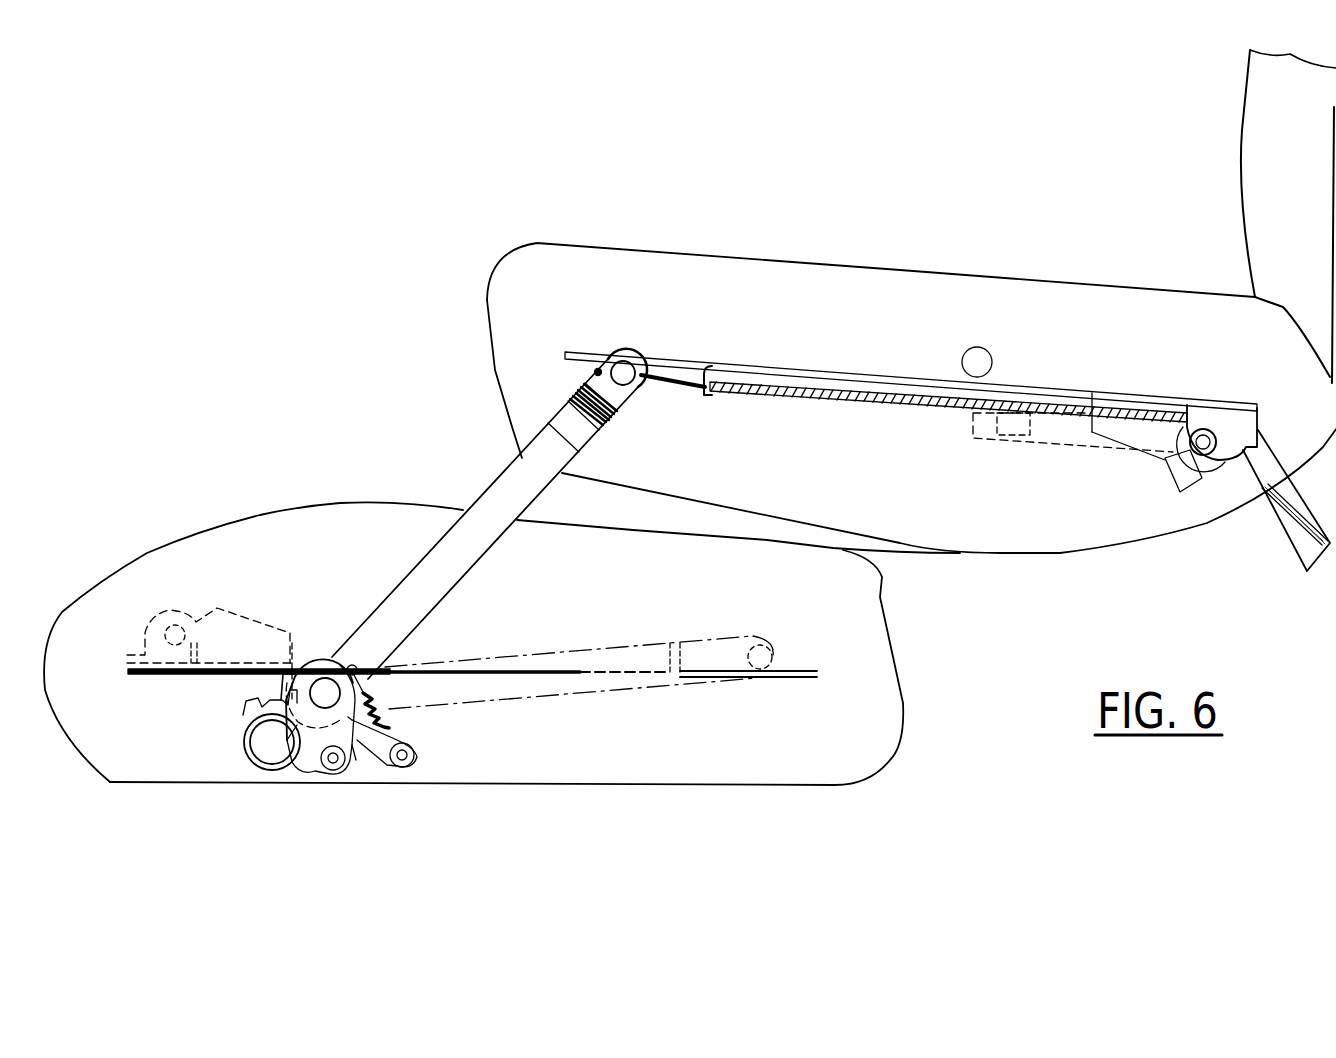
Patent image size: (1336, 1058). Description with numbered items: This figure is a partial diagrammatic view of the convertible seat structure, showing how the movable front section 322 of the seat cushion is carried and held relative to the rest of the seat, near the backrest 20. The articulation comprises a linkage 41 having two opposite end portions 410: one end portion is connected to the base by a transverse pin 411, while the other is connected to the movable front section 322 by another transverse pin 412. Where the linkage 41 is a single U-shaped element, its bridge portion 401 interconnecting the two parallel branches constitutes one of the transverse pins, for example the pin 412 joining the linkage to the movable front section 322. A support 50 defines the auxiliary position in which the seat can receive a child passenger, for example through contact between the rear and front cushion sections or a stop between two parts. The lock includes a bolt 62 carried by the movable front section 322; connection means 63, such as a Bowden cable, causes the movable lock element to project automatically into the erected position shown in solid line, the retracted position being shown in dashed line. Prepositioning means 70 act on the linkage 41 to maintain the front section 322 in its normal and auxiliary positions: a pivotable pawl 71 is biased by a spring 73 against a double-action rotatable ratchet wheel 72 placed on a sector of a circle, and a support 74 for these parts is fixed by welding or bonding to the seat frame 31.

The backrest 20 is at (1219, 192).
The front section 322 is at (502, 543).
The support 50 is at (1093, 551).
The connection means 63 is at (757, 400).
The linkage 41 is at (487, 503).
The end portions 410 is at (604, 412).
The bridge portion 401 is at (636, 385).
The transverse pin 412 is at (625, 385).
The transverse pin 411 is at (323, 690).
The prepositioning means 70 is at (337, 790).
The support 74 is at (250, 702).
The frame 31 is at (244, 757).
The spring 73 is at (388, 722).
The pivotable pawl 71 is at (415, 764).
The ratchet wheel 72 is at (357, 745).
The bolt 62 is at (1053, 447).